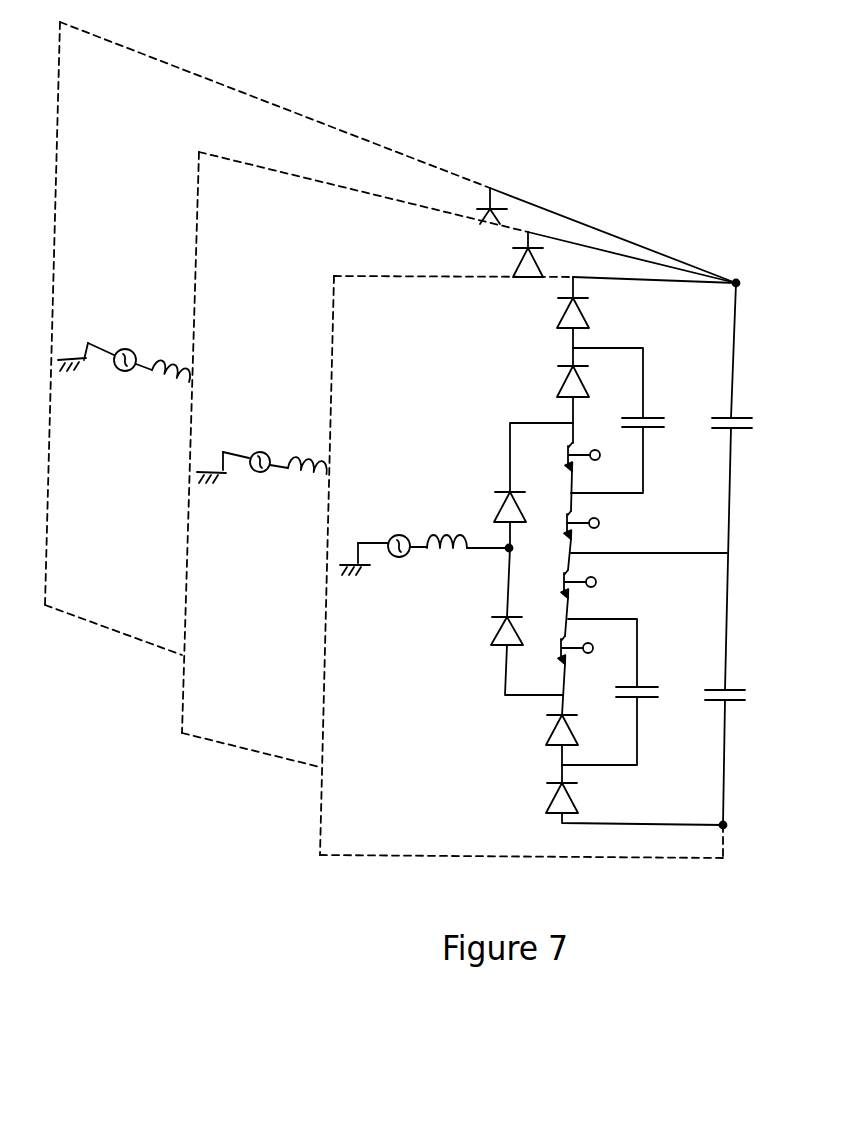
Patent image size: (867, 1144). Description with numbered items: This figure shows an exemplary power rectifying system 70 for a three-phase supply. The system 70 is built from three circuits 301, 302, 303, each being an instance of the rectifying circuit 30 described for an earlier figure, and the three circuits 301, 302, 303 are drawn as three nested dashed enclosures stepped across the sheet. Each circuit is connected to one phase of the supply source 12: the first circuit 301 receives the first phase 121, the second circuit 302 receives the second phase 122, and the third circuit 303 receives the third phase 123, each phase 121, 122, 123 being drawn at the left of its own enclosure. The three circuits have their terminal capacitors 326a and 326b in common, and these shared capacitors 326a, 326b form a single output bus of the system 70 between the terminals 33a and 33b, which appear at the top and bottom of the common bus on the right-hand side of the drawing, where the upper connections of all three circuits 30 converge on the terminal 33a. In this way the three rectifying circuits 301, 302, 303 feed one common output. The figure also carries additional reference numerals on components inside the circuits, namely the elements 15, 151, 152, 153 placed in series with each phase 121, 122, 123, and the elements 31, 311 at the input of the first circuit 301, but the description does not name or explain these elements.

The power rectifying system for three-phase supply 70 is at (148, 898).
The circuit 30 is at (373, 475).
The first circuit 301 is at (347, 834).
The second circuit 302 is at (228, 734).
The third circuit 303 is at (92, 606).
The supply source 12 is at (242, 471).
The first phase 121 is at (383, 567).
The second phase 122 is at (242, 476).
The third phase 123 is at (105, 370).
The inductor 15 is at (311, 470).
The first inductor 151 is at (449, 558).
The second inductor 152 is at (308, 488).
The third inductor 153 is at (172, 394).
The input node 31 is at (529, 559).
The input node of first module 311 is at (529, 559).
The terminal 33a is at (756, 279).
The terminal 33b is at (746, 824).
The terminal capacitor 326a is at (744, 413).
The terminal capacitor 326b is at (737, 685).